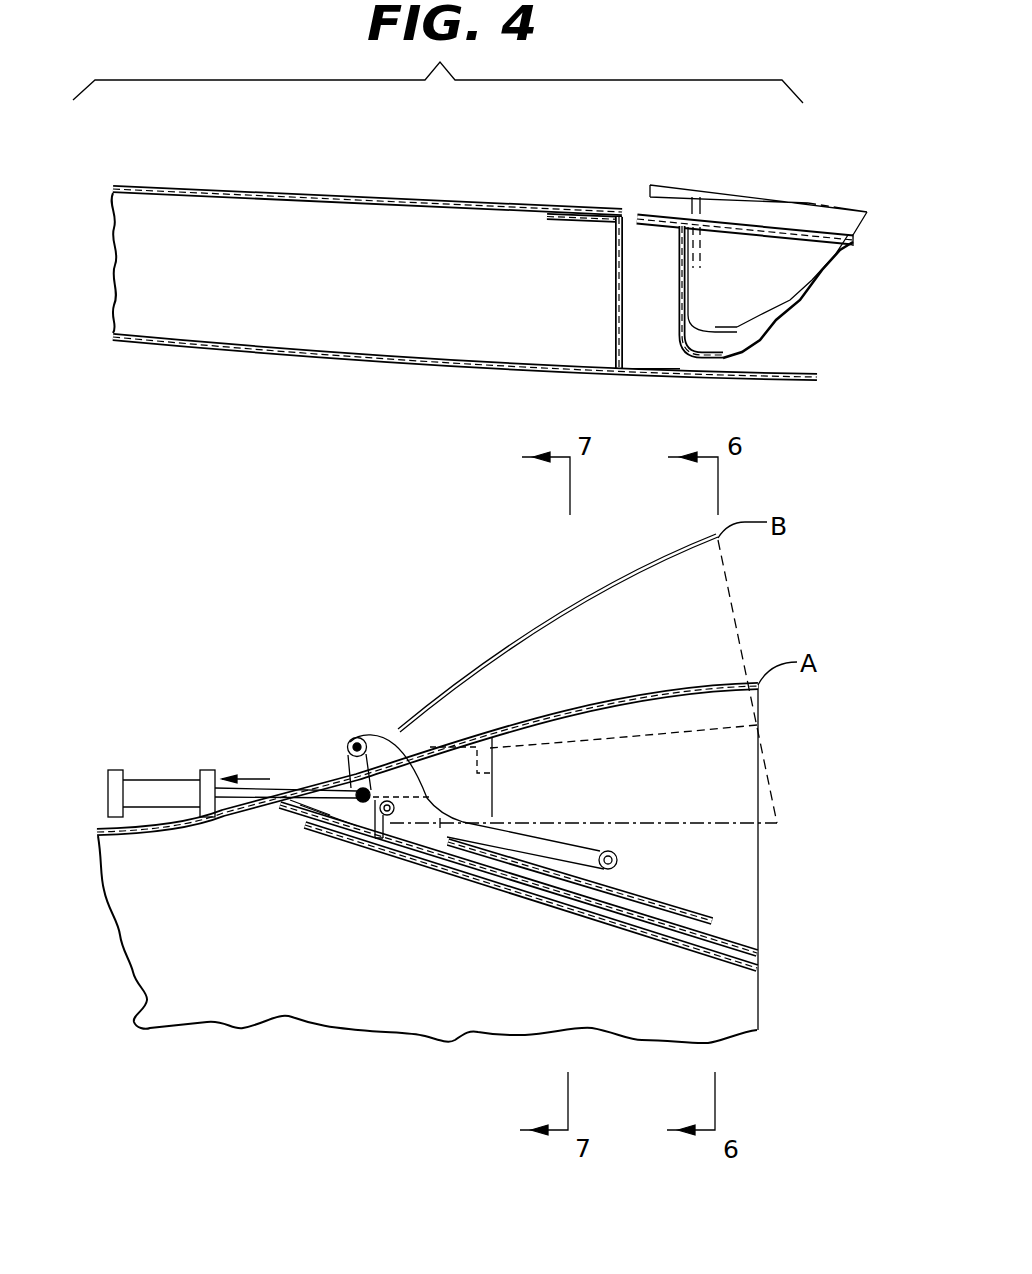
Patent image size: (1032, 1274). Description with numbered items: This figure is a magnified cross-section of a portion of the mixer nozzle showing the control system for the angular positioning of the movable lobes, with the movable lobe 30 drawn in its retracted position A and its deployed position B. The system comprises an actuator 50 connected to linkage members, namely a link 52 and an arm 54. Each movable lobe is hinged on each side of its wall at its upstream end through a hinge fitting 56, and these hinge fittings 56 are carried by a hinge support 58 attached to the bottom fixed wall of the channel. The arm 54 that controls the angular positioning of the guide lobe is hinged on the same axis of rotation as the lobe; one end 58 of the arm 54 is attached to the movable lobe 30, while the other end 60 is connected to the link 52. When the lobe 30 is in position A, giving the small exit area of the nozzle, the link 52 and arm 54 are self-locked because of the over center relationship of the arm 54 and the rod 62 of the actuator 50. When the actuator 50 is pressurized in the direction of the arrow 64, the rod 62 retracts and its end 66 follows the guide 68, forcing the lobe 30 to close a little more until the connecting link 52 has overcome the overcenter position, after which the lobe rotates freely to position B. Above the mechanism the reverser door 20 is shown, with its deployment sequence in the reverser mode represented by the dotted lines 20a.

The reverser door 20 is at (680, 303).
The dotted lines 20a is at (738, 195).
The movable lobe 30 is at (582, 600).
The actuator 50 is at (163, 778).
The link 52 is at (347, 772).
The arm 54 is at (438, 818).
The hinge fitting 56 is at (378, 838).
The hinge support 58 is at (368, 825).
The end of arm 60 is at (365, 738).
The rod 62 is at (296, 790).
The arrow 64 is at (253, 778).
The end of rod 66 is at (350, 827).
The guide 68 is at (307, 817).